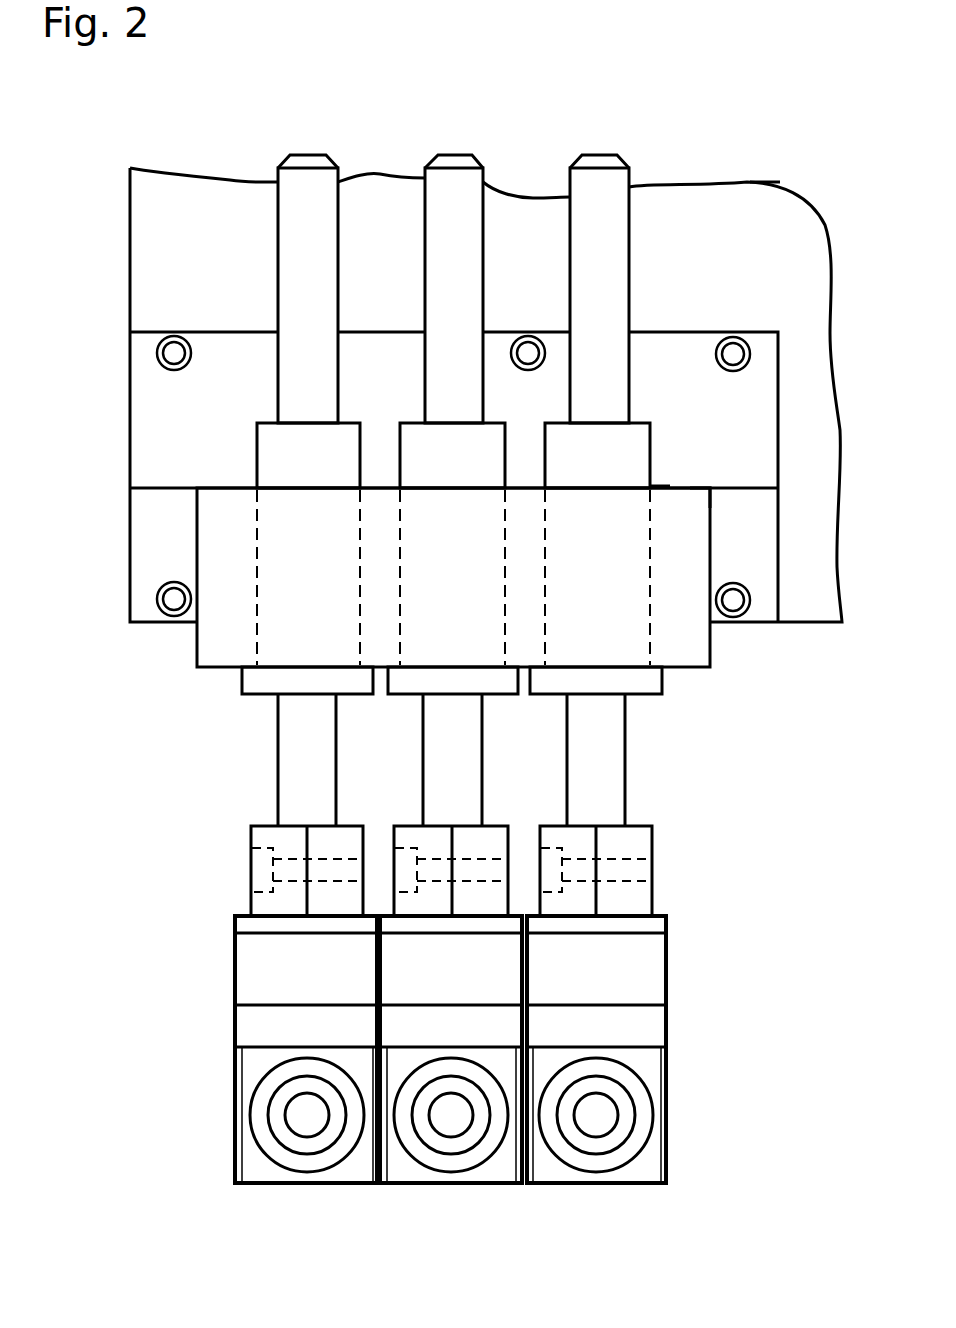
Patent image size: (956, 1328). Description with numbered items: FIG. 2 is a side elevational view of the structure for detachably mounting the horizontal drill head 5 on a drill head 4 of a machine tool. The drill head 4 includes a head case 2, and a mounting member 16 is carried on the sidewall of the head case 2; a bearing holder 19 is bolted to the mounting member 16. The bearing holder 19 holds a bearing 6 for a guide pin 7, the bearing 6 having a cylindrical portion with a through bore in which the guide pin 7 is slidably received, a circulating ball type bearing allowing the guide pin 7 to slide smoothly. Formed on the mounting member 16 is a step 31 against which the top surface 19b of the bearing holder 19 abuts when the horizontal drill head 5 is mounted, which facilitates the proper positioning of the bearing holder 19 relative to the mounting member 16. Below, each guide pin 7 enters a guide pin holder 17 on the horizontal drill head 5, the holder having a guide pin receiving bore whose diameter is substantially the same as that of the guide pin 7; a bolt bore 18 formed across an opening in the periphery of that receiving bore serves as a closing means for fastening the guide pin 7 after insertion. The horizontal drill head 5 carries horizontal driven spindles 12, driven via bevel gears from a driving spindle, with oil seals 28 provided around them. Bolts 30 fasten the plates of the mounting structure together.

The head case 2 is at (802, 252).
The drill head 4 is at (752, 180).
The horizontal drill head 5 is at (667, 990).
The bearing 6 is at (253, 681).
The guide pin 7 is at (597, 187).
The horizontal driven spindle 12 is at (625, 1117).
The mounting member 16 is at (748, 413).
The guide pin holder 17 is at (632, 843).
The bolt bore 18 is at (638, 882).
The bearing holder 19 is at (217, 600).
The top surface 19b is at (710, 489).
The oil seal 28 is at (632, 1145).
The bolt 30 is at (738, 355).
The step 31 is at (668, 489).